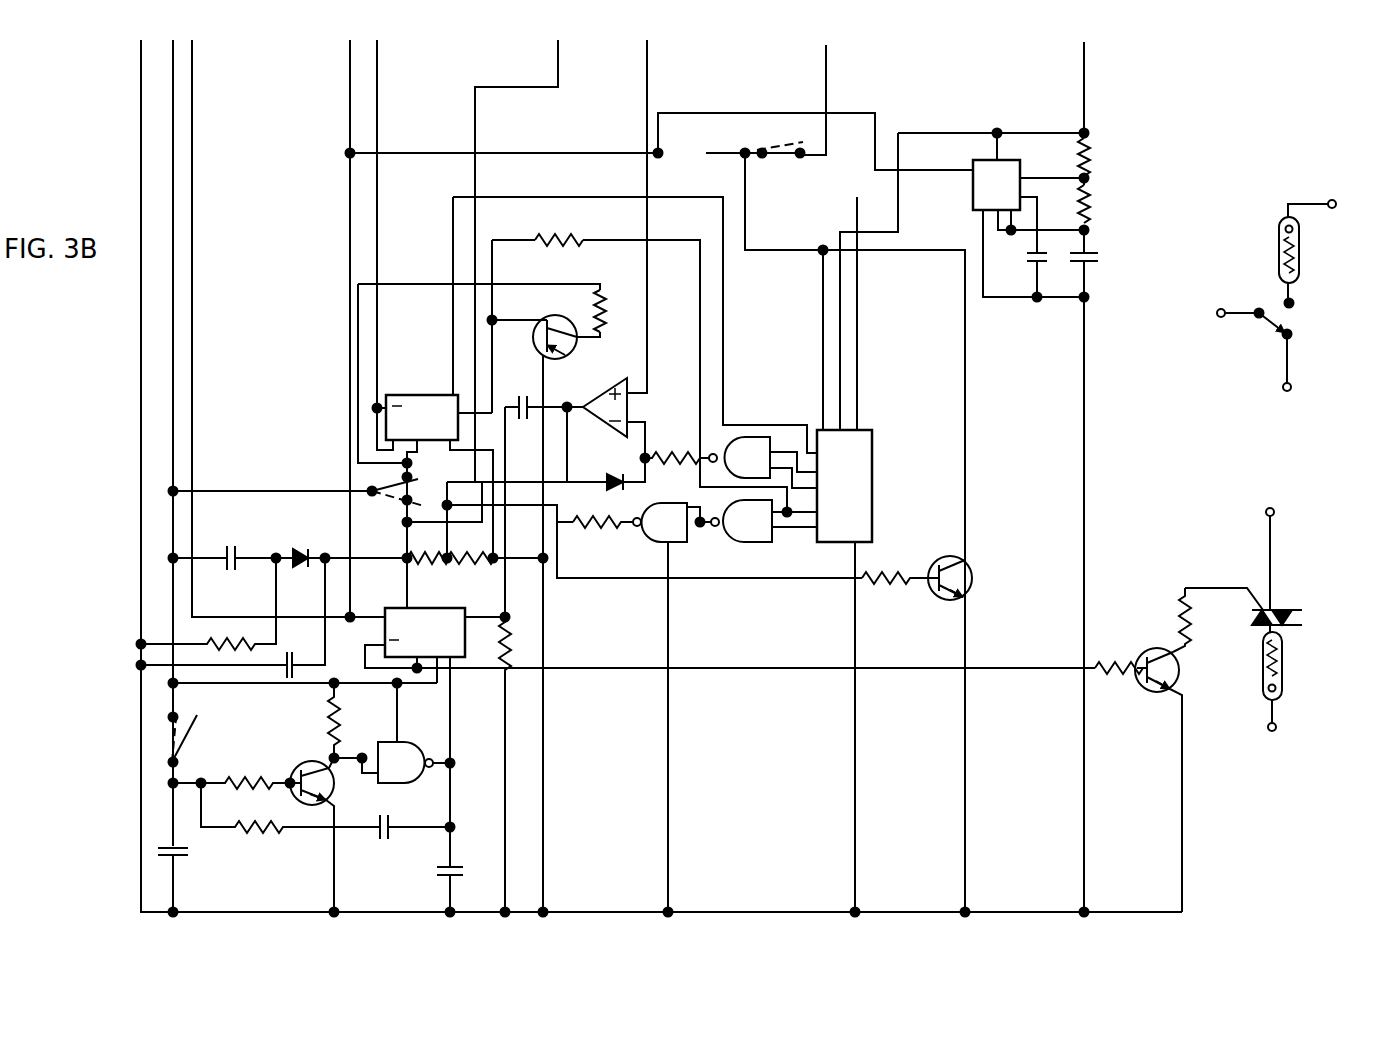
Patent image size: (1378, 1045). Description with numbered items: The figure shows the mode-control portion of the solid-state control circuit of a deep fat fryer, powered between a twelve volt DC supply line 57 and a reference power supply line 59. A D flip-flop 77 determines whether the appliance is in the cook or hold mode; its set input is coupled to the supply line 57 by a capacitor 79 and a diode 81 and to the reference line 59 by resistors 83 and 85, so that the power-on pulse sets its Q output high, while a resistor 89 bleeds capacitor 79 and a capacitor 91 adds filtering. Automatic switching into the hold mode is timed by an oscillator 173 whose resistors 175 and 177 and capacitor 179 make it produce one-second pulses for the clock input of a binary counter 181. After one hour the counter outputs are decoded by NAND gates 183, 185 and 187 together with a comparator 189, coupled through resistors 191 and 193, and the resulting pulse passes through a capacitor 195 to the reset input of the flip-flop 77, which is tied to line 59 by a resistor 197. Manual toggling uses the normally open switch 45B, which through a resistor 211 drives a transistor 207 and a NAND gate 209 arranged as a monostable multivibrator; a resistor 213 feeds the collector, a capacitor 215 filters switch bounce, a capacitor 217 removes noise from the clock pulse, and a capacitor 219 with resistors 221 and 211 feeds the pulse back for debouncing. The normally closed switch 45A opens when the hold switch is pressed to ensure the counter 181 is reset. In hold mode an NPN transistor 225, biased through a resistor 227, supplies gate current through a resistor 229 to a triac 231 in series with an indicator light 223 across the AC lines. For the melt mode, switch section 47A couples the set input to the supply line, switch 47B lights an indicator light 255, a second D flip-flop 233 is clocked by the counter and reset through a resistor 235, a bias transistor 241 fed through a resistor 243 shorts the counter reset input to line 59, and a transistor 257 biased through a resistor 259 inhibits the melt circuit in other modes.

The supply line 57 is at (175, 72).
The reference power supply line 59 is at (141, 68).
The normally closed switch 45A is at (770, 160).
The normally open switch 45B is at (196, 734).
The switch section 47A is at (391, 497).
The switch 47B is at (1295, 320).
The D flip-flop 77 is at (392, 606).
The capacitor 79 is at (228, 545).
The diode 81 is at (303, 546).
The resistor 83 is at (424, 574).
The resistor 85 is at (470, 574).
The resistor 89 is at (212, 633).
The capacitor 91 is at (299, 642).
The oscillator 173 is at (1016, 170).
The resistor 175 is at (1092, 148).
The resistor 177 is at (1092, 192).
The capacitor 179 is at (1098, 258).
The binary counter 181 is at (876, 442).
The NAND gate 183 is at (758, 530).
The NAND gate 185 is at (752, 438).
The third NAND gate 187 is at (682, 536).
The comparator 189 is at (599, 398).
The resistor 191 is at (592, 530).
The resistor 193 is at (678, 446).
The capacitor 195 is at (518, 396).
The resistor 197 is at (506, 638).
The transistor 207 is at (337, 787).
The NAND gate 209 is at (408, 748).
The resistor 211 is at (246, 778).
The resistor 213 is at (328, 724).
The capacitor 215 is at (190, 850).
The capacitor 217 is at (464, 870).
The capacitor 219 is at (384, 840).
The resistor 221 is at (262, 836).
The indicator light 223 is at (1284, 662).
The NPN transistor 225 is at (1180, 668).
The resistor 227 is at (1120, 678).
The resistor 229 is at (1178, 630).
The triac 231 is at (1283, 612).
The second D flip-flop 233 is at (416, 393).
The resistor 235 is at (578, 217).
The bias transistor 241 is at (968, 566).
The resistor 243 is at (888, 584).
The indicator light 255 is at (1300, 243).
The transistor 257 is at (552, 316).
The resistor 259 is at (608, 290).